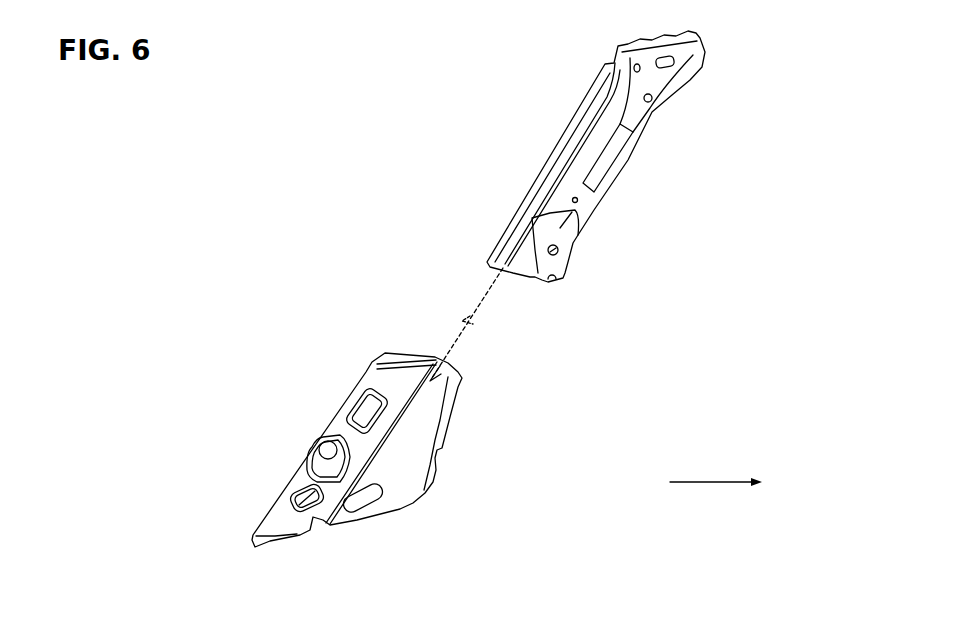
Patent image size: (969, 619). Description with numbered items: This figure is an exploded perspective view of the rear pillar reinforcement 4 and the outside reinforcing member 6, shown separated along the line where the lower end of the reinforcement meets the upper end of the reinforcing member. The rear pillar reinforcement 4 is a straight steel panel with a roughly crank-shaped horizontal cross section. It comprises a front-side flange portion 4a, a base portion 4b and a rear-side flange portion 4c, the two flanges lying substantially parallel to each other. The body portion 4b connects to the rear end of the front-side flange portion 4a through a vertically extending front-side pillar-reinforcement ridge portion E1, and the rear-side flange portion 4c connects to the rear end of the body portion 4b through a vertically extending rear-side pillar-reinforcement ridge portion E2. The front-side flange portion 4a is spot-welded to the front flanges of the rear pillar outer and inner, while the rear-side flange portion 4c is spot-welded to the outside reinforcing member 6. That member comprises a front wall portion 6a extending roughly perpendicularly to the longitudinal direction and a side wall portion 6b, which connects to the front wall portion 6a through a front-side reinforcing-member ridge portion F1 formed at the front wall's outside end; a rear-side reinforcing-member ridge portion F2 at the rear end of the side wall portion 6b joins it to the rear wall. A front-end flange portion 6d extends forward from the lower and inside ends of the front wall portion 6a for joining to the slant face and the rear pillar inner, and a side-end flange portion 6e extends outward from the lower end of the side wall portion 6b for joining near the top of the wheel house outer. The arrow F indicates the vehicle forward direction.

The rear pillar reinforcement 4 is at (547, 157).
The front-side flange portion 4a is at (645, 122).
The base portion 4b is at (562, 197).
The rear-side flange portion 4c is at (532, 198).
The front-side pillar-reinforcement ridge portion E1 is at (603, 157).
The rear-side pillar-reinforcement ridge portion E2 is at (588, 125).
The outside reinforcing member 6 is at (358, 451).
The front wall portion 6a is at (423, 452).
The side wall portion 6b is at (278, 518).
The front-end flange portion 6d is at (383, 510).
The side-end flange portion 6e is at (272, 540).
The front-side reinforcing-member ridge portion F1 is at (403, 406).
The rear-side reinforcing-member ridge portion F2 is at (347, 402).
The vehicle front direction F is at (717, 484).